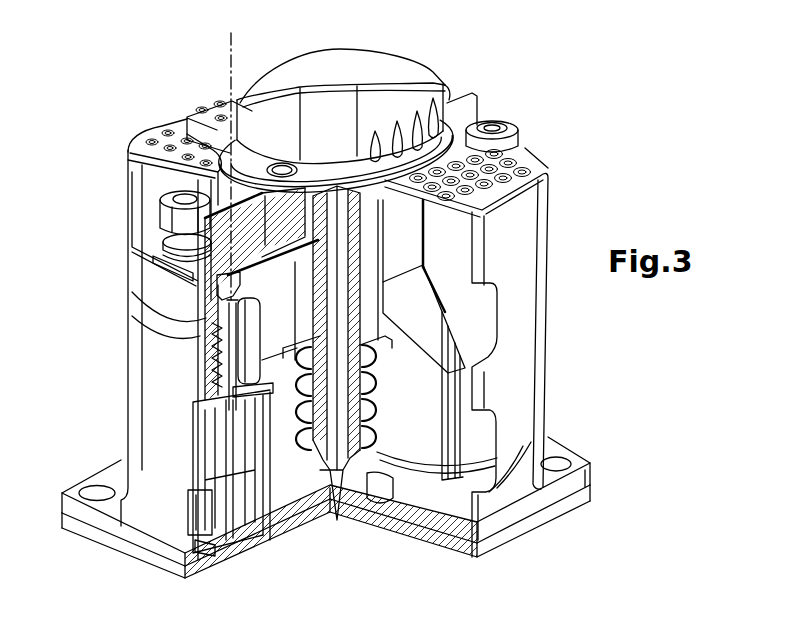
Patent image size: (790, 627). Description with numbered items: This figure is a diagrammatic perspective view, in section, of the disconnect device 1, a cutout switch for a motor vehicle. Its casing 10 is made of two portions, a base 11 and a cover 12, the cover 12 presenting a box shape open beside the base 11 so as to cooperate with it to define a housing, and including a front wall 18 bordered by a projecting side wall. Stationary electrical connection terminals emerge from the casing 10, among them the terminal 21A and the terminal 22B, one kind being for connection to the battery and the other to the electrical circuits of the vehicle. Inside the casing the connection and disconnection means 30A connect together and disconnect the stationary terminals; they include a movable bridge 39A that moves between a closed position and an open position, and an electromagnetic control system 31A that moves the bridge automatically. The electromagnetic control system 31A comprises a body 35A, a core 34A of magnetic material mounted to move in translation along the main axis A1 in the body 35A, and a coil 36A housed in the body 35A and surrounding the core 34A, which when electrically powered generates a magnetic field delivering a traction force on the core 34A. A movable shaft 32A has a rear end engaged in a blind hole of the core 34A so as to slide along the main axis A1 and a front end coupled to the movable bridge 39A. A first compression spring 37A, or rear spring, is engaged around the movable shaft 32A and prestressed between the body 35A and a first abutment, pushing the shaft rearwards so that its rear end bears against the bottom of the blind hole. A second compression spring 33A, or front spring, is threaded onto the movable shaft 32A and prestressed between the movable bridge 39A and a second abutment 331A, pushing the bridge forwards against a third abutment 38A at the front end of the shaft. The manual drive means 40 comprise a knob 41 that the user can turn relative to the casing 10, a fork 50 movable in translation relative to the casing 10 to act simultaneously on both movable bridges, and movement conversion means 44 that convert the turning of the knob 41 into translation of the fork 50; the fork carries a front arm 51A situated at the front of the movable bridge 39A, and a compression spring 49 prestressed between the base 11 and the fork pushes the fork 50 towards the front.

The disconnect device 1 is at (98, 146).
The casing 10 is at (672, 515).
The base 11 is at (588, 493).
The cover 12 is at (593, 475).
The front wall 18 is at (487, 167).
The stationary electrical connection terminal 21A is at (160, 214).
The stationary electrical connection terminal 22B is at (517, 144).
The connection and disconnection means 30A is at (255, 542).
The electromagnetic control system 31A is at (257, 437).
The movable shaft 32A is at (205, 542).
The second compression spring 33A is at (212, 372).
The second abutment 331A is at (202, 400).
The core 34A is at (200, 494).
The body 35A is at (318, 485).
The coil 36A is at (273, 460).
The first compression spring 37A is at (213, 450).
The third abutment 38A is at (226, 322).
The movable bridge 39A is at (220, 350).
The manual drive means 40 is at (380, 52).
The knob 41 is at (410, 70).
The movement conversion means 44 is at (383, 222).
The compression spring 49 is at (386, 416).
The fork 50 is at (420, 295).
The front arm 51A is at (212, 290).
The main axis A1 is at (231, 66).